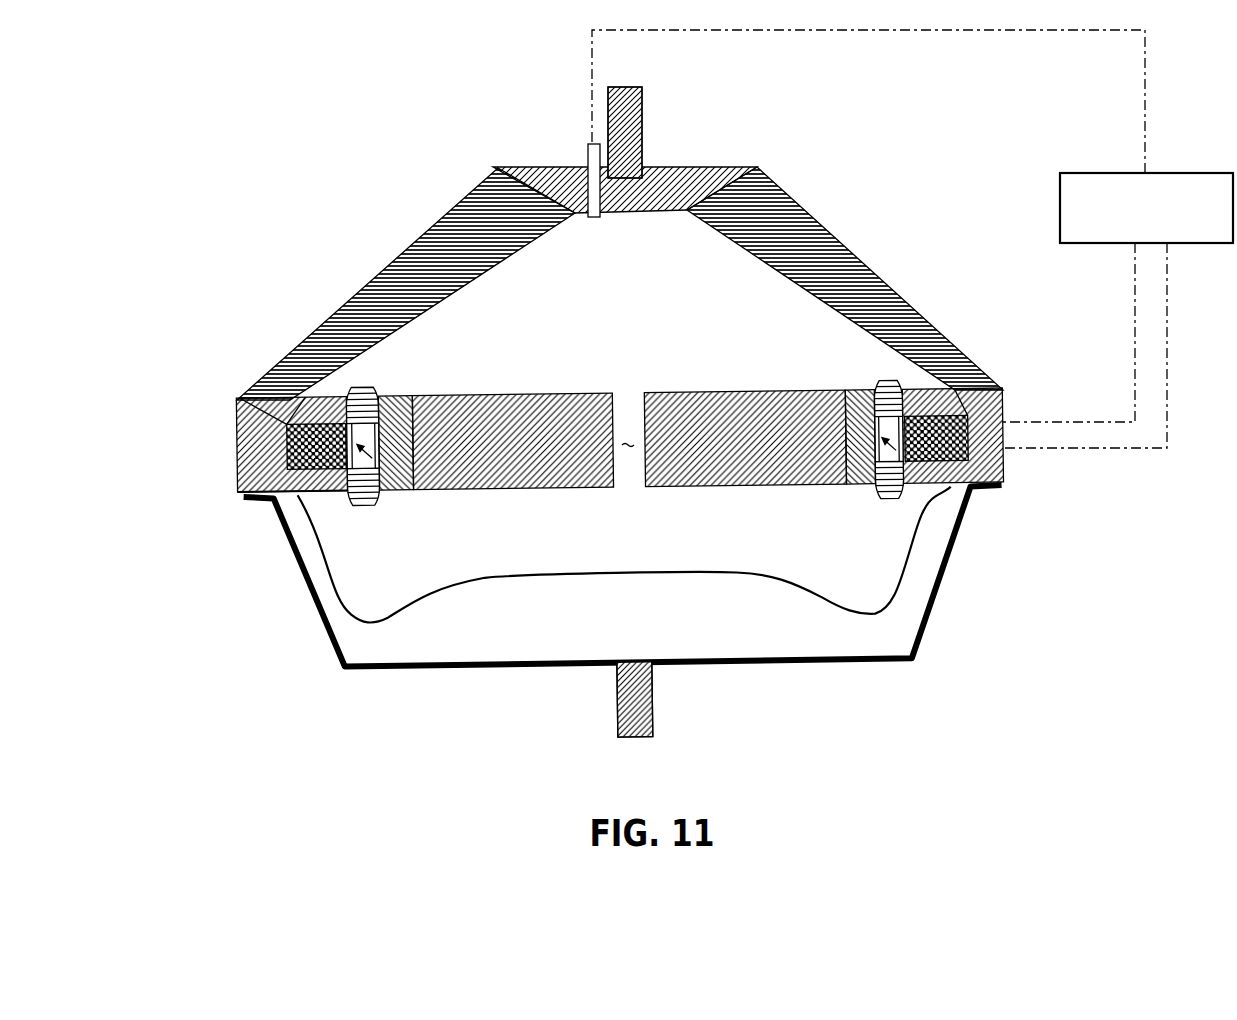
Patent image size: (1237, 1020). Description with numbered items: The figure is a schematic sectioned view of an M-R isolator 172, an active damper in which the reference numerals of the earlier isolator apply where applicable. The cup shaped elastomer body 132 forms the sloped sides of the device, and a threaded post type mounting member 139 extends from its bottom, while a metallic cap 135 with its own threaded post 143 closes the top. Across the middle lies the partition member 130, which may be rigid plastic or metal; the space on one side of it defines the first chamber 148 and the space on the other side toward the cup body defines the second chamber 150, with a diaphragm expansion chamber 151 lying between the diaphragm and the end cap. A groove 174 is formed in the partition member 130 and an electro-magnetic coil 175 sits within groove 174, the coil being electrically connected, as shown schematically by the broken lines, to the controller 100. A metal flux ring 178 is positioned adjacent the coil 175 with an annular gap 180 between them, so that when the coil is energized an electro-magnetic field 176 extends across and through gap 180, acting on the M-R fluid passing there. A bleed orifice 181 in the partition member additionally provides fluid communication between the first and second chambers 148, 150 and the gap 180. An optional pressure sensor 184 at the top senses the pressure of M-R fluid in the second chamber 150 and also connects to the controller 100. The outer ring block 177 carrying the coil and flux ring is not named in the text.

The controller 100 is at (1095, 172).
The partition member 130 is at (745, 393).
The cup shaped elastomer body 132 is at (448, 212).
The metallic cap 135 is at (948, 564).
The threaded post type mounting member 139 is at (650, 699).
The threaded post 143 is at (643, 130).
The first chamber 148 is at (654, 576).
The second chamber 150 is at (615, 312).
The diaphragm expansion chamber 151 is at (690, 617).
The M-R isolator 172 is at (328, 238).
The groove 174 is at (322, 482).
The electro-magnetic coil 175 is at (253, 388).
The electro-magnetic field 176 is at (362, 390).
The outer ring block 177 is at (235, 455).
The metal flux ring 178 is at (392, 400).
The annular gap 180 is at (362, 450).
The bleed orifice 181 is at (627, 452).
The pressure sensor 184 is at (587, 142).